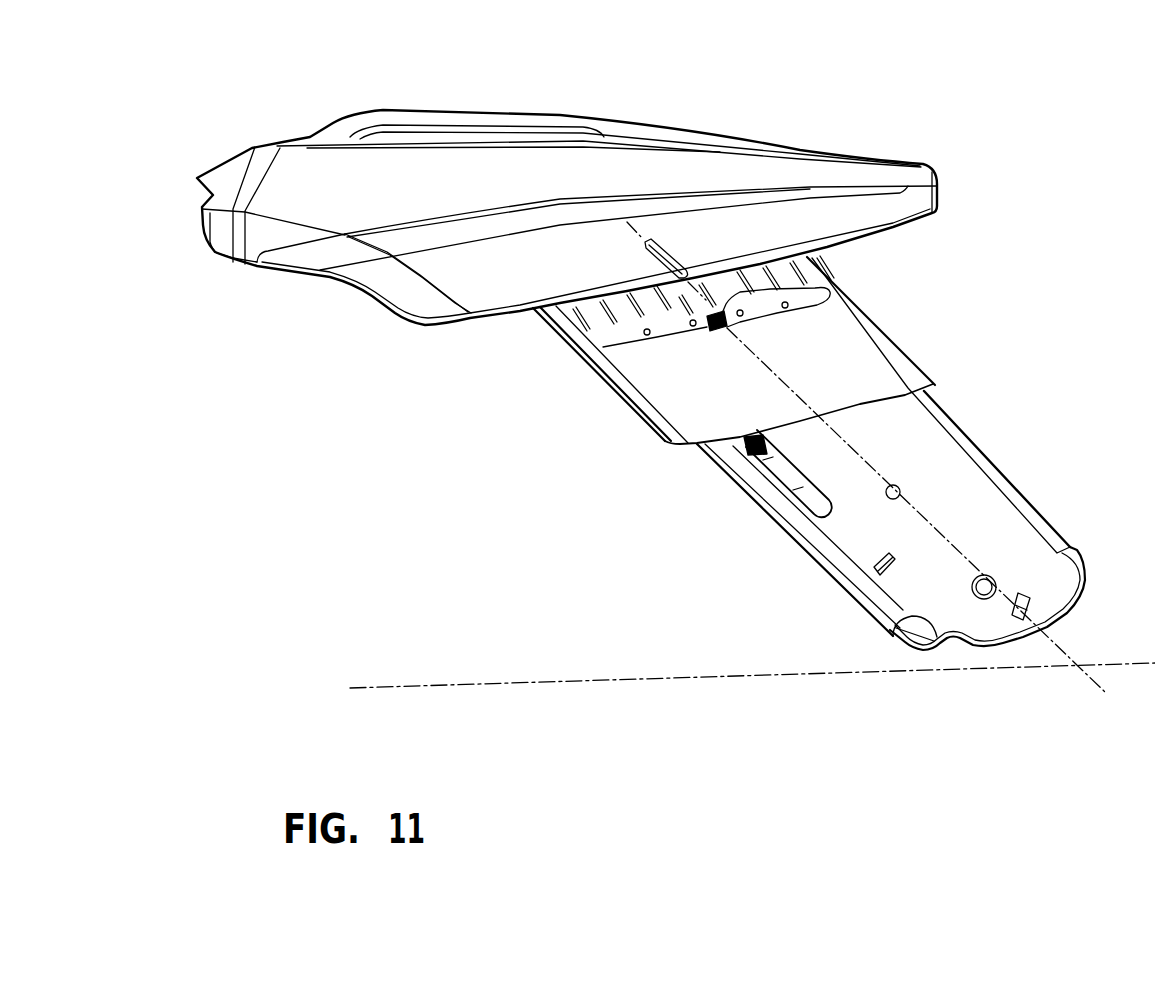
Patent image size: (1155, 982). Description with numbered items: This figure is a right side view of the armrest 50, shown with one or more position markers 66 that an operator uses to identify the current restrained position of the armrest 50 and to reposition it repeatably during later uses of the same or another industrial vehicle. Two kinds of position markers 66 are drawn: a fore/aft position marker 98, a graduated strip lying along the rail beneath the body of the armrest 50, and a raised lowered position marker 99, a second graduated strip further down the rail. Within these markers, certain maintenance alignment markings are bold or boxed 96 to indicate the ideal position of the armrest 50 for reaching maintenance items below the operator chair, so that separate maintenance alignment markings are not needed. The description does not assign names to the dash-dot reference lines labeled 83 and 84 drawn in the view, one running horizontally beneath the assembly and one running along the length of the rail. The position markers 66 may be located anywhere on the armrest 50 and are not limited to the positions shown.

The armrest 50 is at (900, 113).
The position markers 66 is at (538, 335).
The horizontal reference line 83 is at (548, 686).
The longitudinal centerline 84 is at (793, 379).
The bold or boxed maintenance alignment markings 96 is at (736, 301).
The fore/aft position marker 98 is at (659, 338).
The raised lowered position marker 99 is at (797, 500).